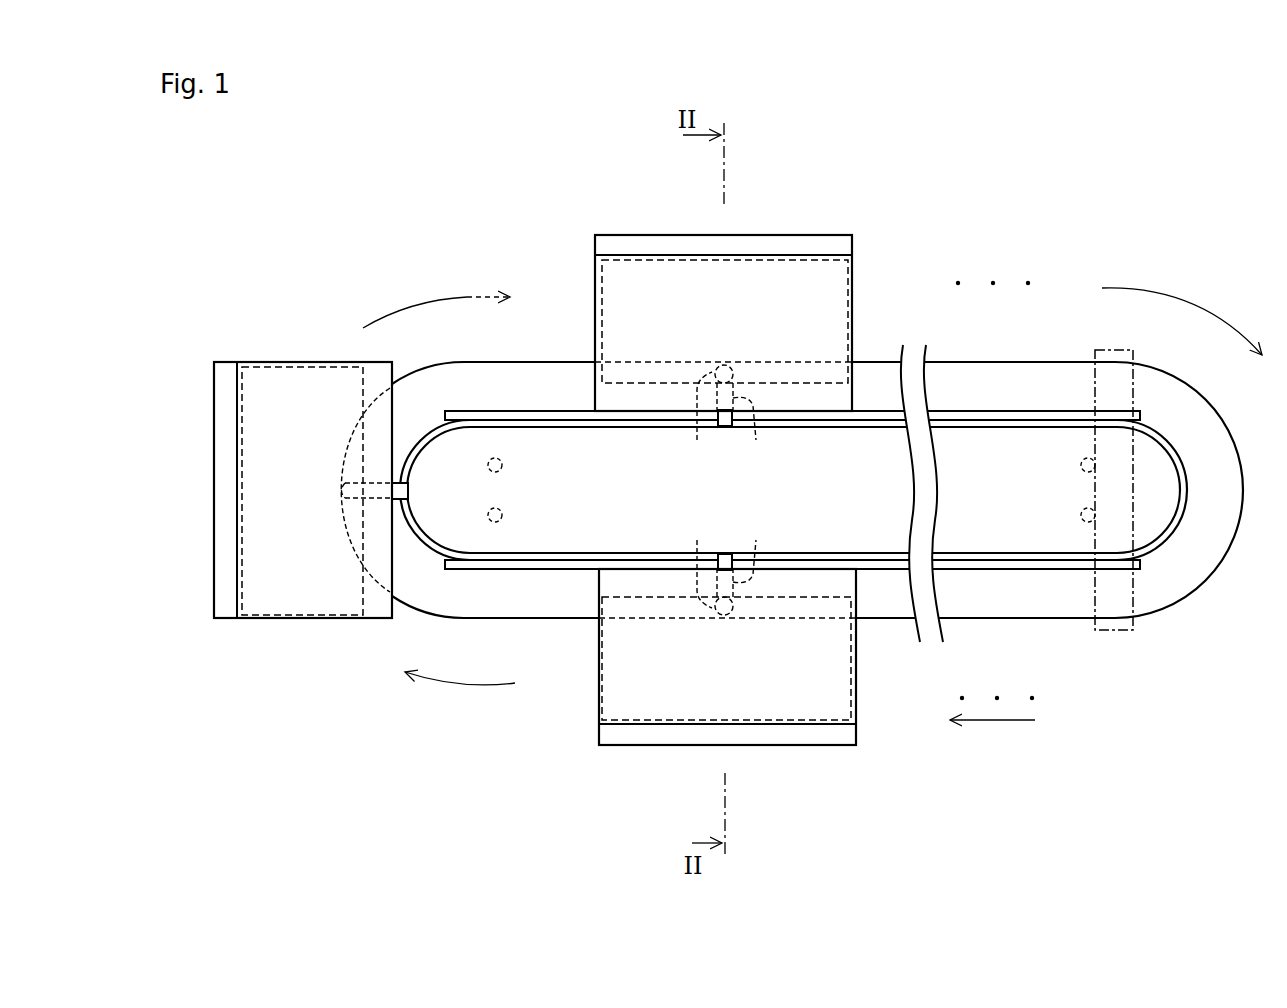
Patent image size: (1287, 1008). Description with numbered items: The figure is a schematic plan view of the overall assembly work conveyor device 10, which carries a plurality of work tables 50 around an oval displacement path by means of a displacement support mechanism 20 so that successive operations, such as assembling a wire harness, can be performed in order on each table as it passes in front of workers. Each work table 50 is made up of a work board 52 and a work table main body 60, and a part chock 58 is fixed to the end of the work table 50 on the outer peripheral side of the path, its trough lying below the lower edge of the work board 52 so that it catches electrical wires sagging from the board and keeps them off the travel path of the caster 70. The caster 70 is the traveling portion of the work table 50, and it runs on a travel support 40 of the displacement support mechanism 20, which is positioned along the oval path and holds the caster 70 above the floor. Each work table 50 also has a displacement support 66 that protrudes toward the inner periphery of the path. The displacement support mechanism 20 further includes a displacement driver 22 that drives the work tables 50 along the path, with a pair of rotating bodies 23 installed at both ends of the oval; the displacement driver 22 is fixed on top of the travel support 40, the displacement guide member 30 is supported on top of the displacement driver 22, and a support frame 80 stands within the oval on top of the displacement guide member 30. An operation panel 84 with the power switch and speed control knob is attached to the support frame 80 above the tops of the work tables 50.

The assembly work conveyor device 10 is at (963, 192).
The displacement support mechanism 20 is at (997, 358).
The displacement driver 22 is at (548, 411).
The rotating body 23 is at (438, 428).
The displacement guide member 30 is at (552, 571).
The travel support 40 is at (952, 360).
The work table 50 is at (569, 491).
The work board 52 is at (833, 250).
The part chock 58 is at (852, 248).
The work table main body 60 is at (327, 362).
The displacement support 66 is at (395, 507).
The caster 70 is at (345, 495).
The support frame 80 is at (503, 510).
The operation panel 84 is at (1128, 630).